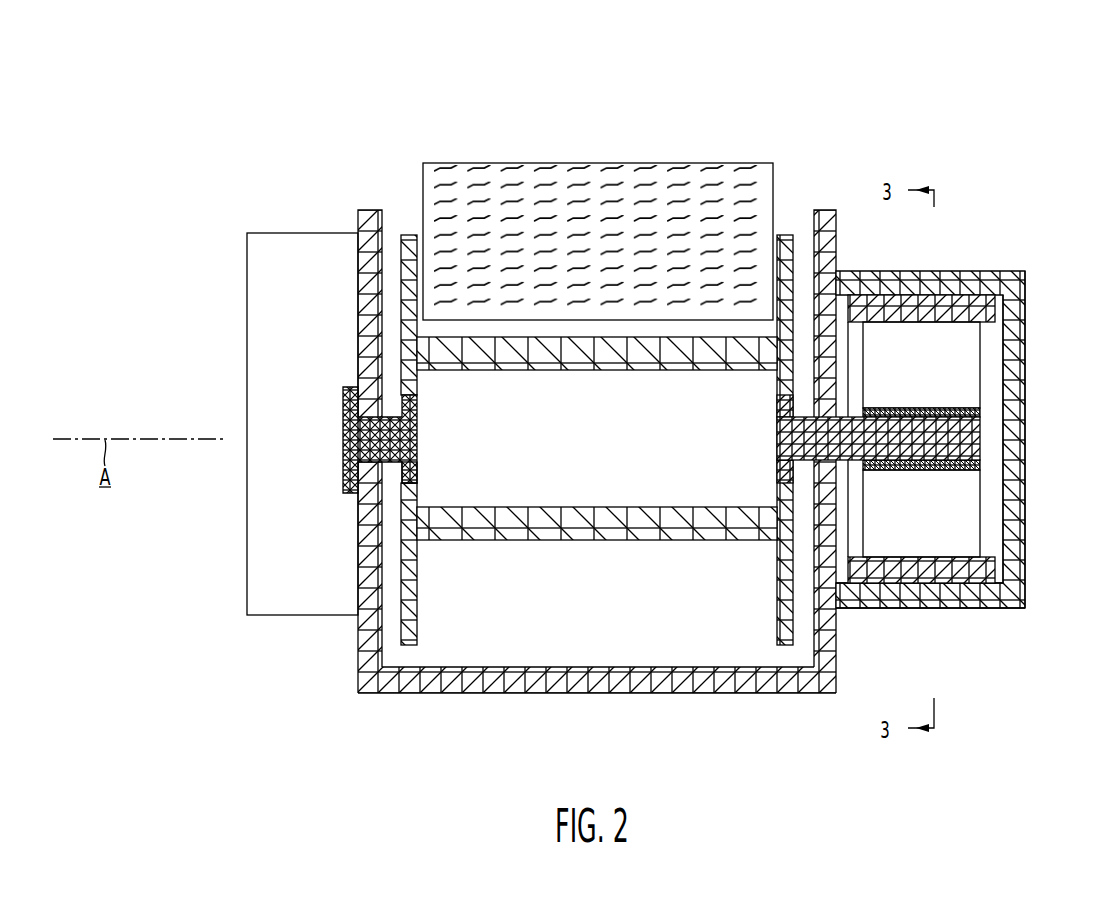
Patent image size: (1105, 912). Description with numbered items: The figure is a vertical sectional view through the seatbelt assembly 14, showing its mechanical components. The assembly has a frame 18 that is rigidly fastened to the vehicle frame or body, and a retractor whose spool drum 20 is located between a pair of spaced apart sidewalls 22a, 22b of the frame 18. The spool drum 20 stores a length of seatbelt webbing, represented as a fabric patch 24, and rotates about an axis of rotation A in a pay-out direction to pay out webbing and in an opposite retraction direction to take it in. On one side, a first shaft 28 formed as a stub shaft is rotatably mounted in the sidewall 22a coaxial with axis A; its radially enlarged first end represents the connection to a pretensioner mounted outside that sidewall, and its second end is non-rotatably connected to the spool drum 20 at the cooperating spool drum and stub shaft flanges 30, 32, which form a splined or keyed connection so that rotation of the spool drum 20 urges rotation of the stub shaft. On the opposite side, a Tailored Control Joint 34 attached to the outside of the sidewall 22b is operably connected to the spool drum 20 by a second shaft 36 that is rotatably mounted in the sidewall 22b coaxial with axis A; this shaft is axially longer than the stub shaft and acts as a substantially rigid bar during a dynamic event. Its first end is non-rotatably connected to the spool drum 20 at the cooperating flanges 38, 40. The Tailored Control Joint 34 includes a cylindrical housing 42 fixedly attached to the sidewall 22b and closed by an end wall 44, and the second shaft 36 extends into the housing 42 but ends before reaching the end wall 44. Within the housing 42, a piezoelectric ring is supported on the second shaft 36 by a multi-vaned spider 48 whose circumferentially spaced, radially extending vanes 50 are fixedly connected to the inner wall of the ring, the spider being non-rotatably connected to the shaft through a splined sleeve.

The seatbelt assembly 14 is at (1037, 70).
The frame 18 is at (358, 655).
The spool drum 20 is at (410, 235).
The sidewall 22a is at (370, 210).
The sidewall 22b is at (848, 160).
The fabric patch 24 is at (741, 128).
The first shaft 28 is at (457, 435).
The spool drum flange 30 is at (457, 393).
The stub shaft flange 32 is at (457, 467).
The Tailored Control Joint 34 is at (1079, 318).
The second shaft 36 is at (1079, 433).
The spool drum flange 38 is at (777, 378).
The shaft flange 40 is at (777, 470).
The cylindrical housing 42 is at (963, 645).
The end wall 44 is at (1060, 480).
The multi-vaned spider 48 is at (1074, 379).
The vanes 50 is at (921, 439).